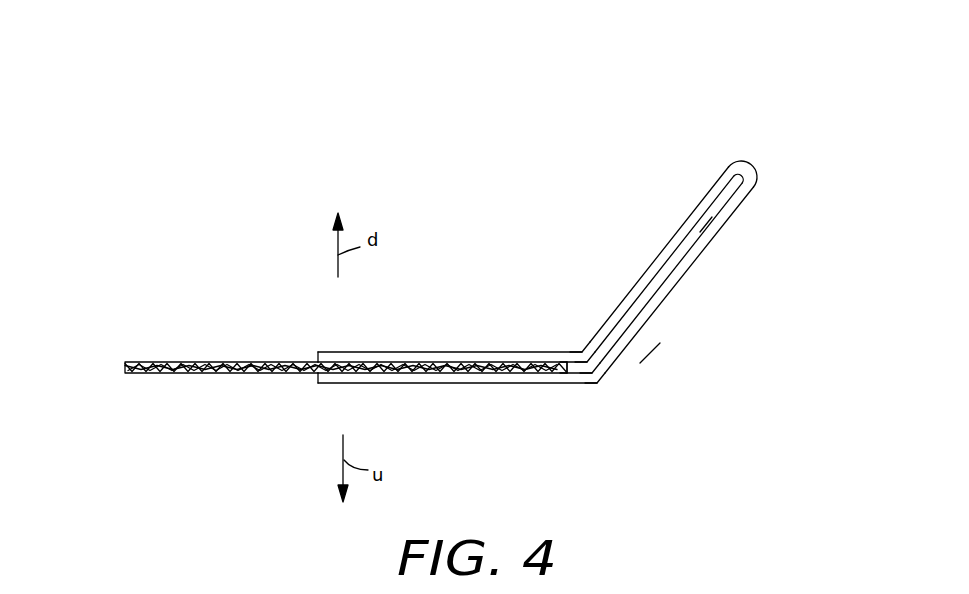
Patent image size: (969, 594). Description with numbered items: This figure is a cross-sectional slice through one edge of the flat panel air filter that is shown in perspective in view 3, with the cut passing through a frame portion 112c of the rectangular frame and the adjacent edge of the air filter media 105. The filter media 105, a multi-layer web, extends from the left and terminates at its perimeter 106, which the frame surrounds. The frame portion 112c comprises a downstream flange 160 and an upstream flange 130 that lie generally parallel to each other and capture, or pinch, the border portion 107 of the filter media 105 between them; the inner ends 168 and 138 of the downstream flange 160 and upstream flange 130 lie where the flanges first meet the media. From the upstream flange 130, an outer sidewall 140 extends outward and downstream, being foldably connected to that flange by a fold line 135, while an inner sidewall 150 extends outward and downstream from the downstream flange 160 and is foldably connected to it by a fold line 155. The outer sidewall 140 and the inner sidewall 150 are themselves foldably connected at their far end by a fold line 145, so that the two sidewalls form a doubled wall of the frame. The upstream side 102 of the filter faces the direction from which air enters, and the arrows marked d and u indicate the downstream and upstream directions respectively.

The section view indicator 3 is at (633, 153).
The upstream side 102 is at (672, 372).
The air filter media 105 is at (185, 362).
The perimeter 106 is at (567, 374).
The border portion 107 is at (512, 374).
The direction indicator / edge 112c is at (732, 240).
The upstream flange 130 is at (435, 385).
The fold line 135 is at (597, 384).
The lower sleeve end 138 is at (317, 381).
The outer sidewall 140 is at (681, 277).
The fold line 145 is at (743, 161).
The inner sidewall 150 is at (650, 265).
The fold line 155 is at (582, 351).
The downstream flange 160 is at (433, 351).
The upper sleeve end 168 is at (317, 361).